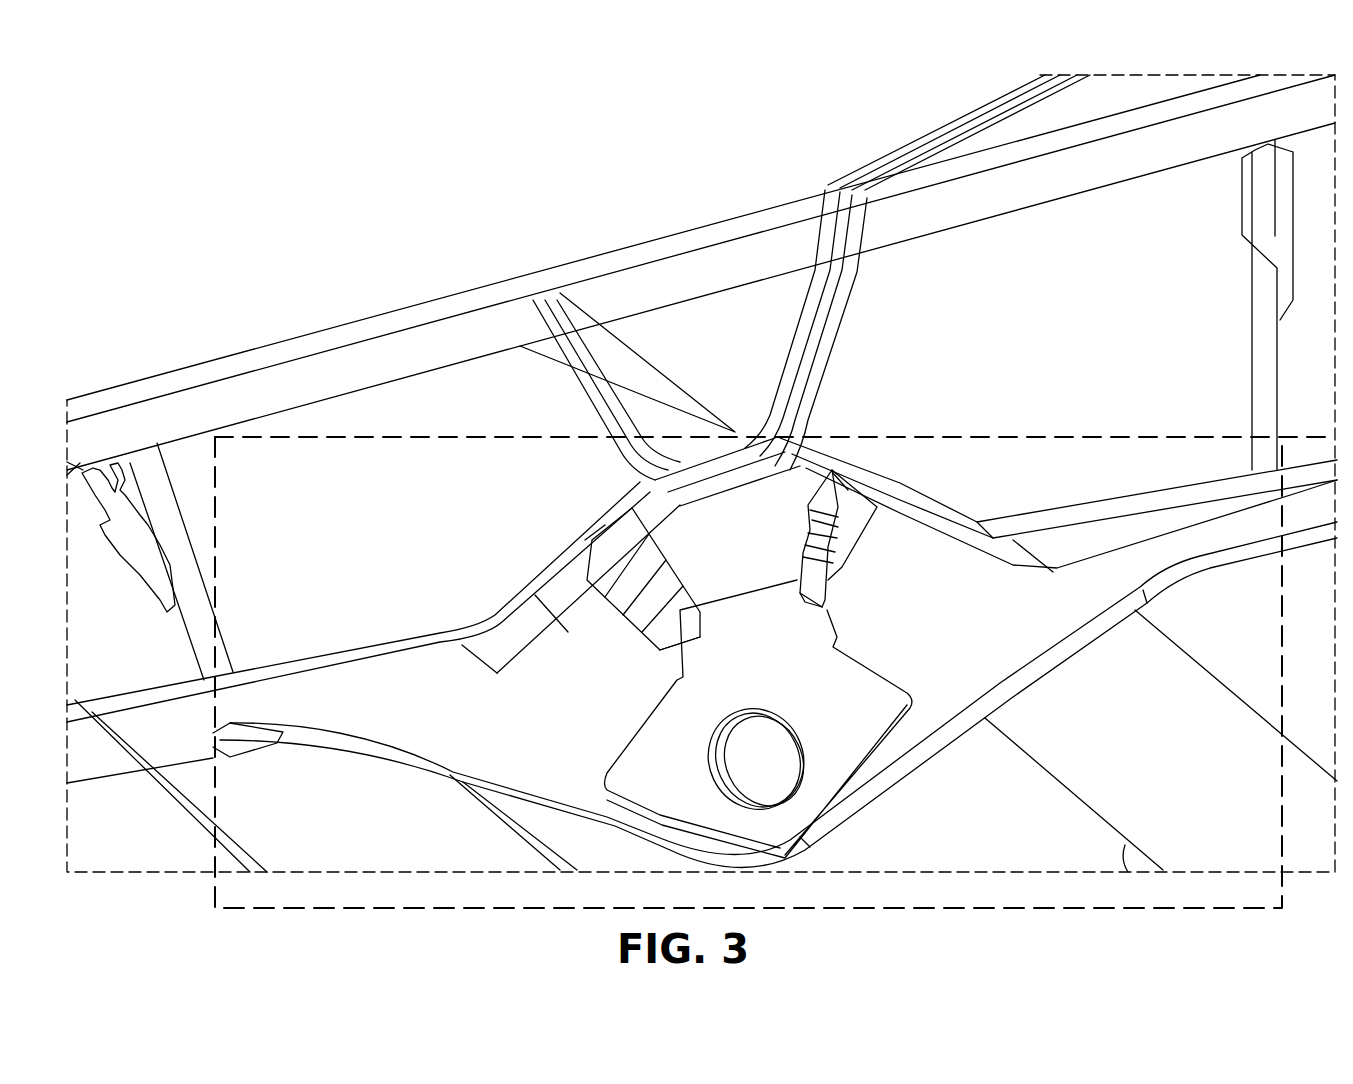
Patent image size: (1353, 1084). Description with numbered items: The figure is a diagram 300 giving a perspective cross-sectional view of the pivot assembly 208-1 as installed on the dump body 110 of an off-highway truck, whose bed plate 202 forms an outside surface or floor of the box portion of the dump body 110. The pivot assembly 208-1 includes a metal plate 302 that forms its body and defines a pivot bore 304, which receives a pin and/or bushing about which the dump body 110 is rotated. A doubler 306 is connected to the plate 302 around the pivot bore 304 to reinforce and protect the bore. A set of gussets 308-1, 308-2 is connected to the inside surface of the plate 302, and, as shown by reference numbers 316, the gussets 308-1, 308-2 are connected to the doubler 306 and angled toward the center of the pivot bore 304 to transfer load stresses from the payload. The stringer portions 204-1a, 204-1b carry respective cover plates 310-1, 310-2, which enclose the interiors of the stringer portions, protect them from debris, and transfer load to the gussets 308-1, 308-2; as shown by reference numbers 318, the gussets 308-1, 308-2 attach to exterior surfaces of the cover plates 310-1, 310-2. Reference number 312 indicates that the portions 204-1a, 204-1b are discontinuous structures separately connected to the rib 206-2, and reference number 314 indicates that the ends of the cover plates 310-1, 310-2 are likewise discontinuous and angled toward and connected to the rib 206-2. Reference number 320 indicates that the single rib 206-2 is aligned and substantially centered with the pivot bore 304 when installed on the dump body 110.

The diagram 300 is at (173, 62).
The dump body 110 is at (701, 275).
The bed plate 202 is at (336, 828).
The portion of the stringer 204-1a is at (376, 520).
The portion of the stringer 204-1b is at (1080, 285).
The rib 206-2 is at (763, 490).
The pivot assembly 208-1 is at (216, 908).
The plate 302 is at (530, 720).
The pivot bore 304 is at (755, 760).
The doubler 306 is at (866, 720).
The gusset 308-1 is at (665, 621).
The gusset 308-2 is at (843, 560).
The cover plate 310-1 is at (392, 690).
The cover plate 310-2 is at (1150, 545).
The discontinuous stringer portions connection 312 is at (970, 372).
The cover plate ends connection 314 is at (650, 480).
The gusset-to-doubler connection 316 is at (703, 642).
The gusset-to-cover plate connection 318 is at (590, 532).
The rib alignment with pivot bore 320 is at (737, 512).